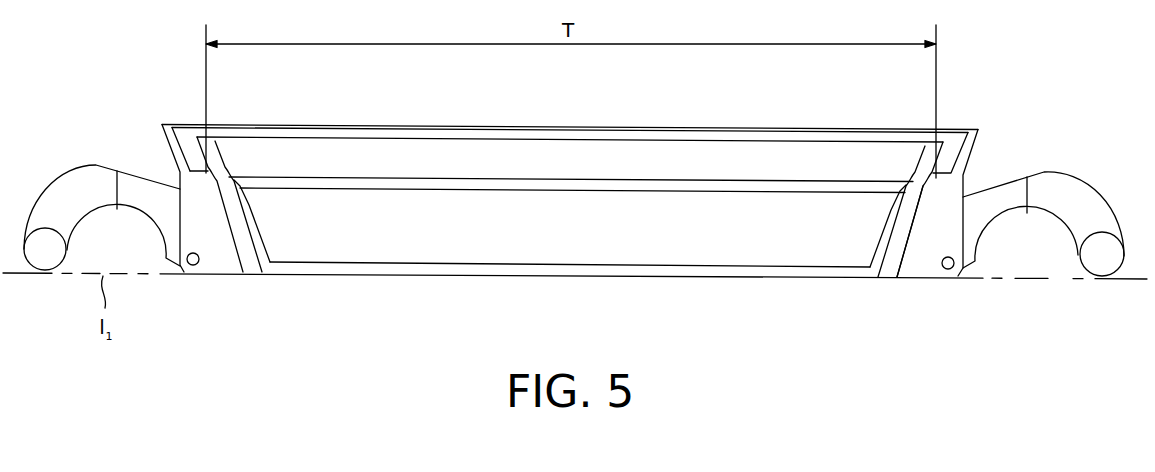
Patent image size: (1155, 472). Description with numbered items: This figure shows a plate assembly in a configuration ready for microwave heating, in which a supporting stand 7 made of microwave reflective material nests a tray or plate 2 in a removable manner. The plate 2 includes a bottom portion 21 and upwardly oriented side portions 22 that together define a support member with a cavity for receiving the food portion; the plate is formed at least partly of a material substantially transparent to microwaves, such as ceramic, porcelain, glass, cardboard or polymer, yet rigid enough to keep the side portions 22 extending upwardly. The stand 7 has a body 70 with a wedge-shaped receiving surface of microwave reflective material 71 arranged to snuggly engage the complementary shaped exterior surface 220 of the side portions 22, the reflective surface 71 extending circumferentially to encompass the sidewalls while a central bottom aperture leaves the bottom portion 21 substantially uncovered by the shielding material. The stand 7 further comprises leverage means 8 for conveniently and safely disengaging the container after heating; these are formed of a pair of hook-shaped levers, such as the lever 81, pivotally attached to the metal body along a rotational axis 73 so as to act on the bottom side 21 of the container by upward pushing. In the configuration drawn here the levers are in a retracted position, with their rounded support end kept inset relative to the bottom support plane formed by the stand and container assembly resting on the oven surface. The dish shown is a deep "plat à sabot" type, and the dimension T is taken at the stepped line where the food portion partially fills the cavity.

The plate 2 is at (415, 121).
The supporting stand 7 is at (162, 120).
The leverage means 8 is at (1032, 327).
The bottom portion 21 is at (646, 278).
The side portions 22 is at (903, 231).
The body 70 is at (183, 174).
The microwave reflective receiving surface 71 is at (218, 200).
The rotational axis 73 is at (190, 274).
The lever 81 is at (1086, 278).
The exterior surface 220 is at (257, 230).